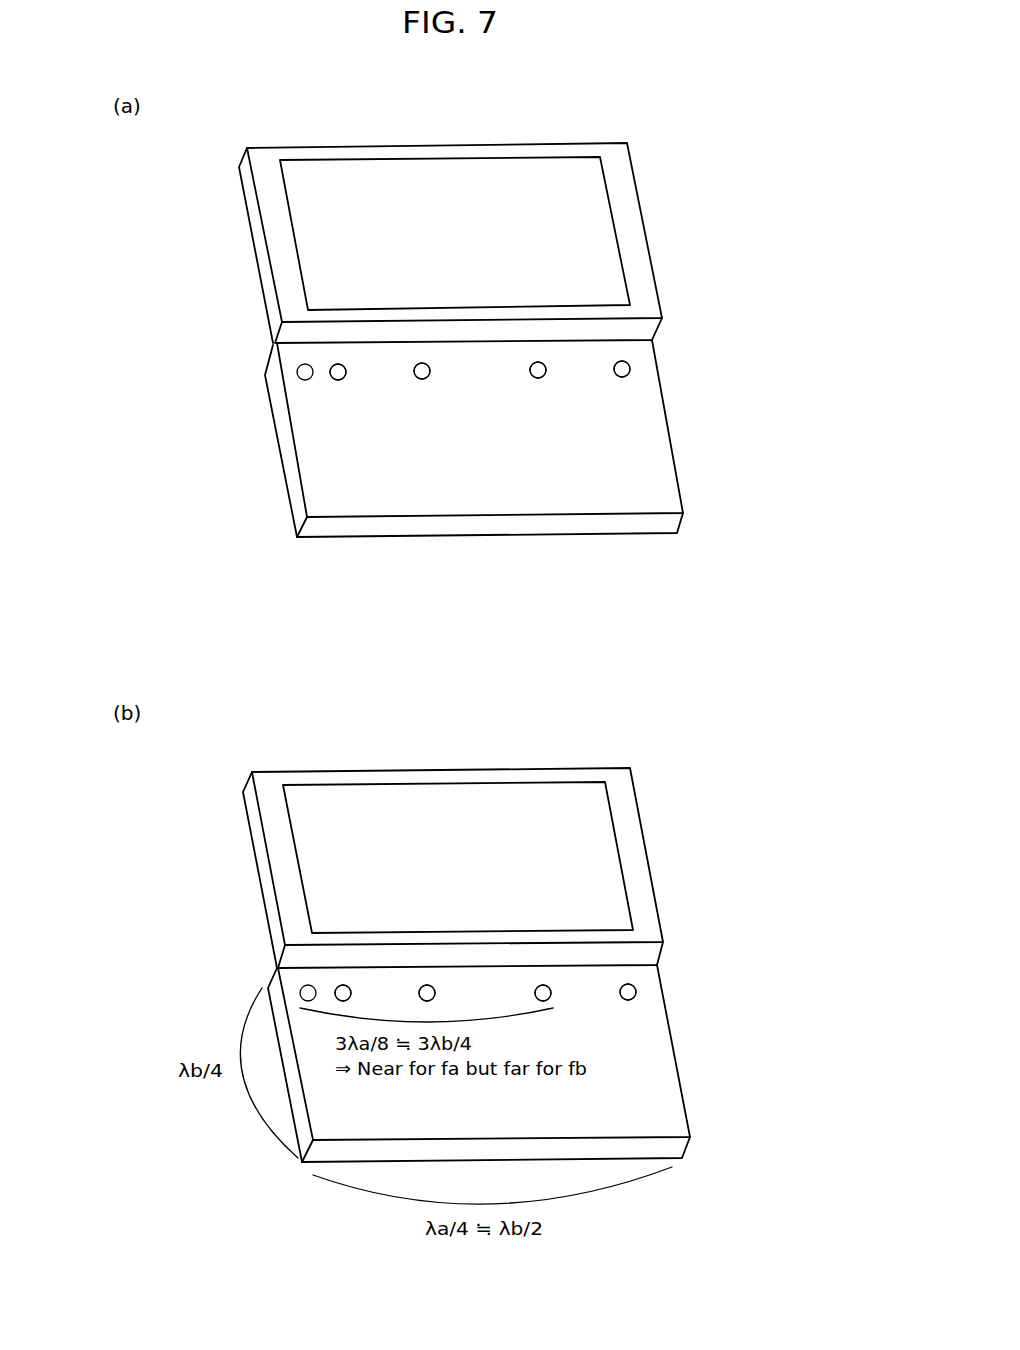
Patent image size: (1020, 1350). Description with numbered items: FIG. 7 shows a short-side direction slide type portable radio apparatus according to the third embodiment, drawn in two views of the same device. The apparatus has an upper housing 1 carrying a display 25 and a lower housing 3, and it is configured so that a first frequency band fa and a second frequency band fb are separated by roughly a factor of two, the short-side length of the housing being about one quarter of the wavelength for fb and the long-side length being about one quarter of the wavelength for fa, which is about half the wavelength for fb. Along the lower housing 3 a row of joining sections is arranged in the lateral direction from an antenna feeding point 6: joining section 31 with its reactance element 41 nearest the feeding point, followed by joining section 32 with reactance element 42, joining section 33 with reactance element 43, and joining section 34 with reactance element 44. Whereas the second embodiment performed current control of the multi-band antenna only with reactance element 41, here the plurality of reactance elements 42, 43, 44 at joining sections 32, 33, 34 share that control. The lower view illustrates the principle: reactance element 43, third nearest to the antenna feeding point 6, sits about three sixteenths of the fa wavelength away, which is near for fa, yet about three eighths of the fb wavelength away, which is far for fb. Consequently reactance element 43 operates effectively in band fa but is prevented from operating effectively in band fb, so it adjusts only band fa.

The housing (upper housing / lid) 1 is at (258, 244).
The lower housing (keyboard section) 3 is at (277, 398).
The antenna feeding point 6 is at (297, 372).
The display 25 is at (445, 163).
The joining section 31 is at (337, 380).
The joining section 32 is at (421, 379).
The joining section 33 is at (538, 378).
The joining section 34 is at (620, 377).
The reactance element 41 is at (200, 682).
The reactance element 42 is at (402, 682).
The reactance element 43 is at (639, 681).
The reactance element 44 is at (719, 680).